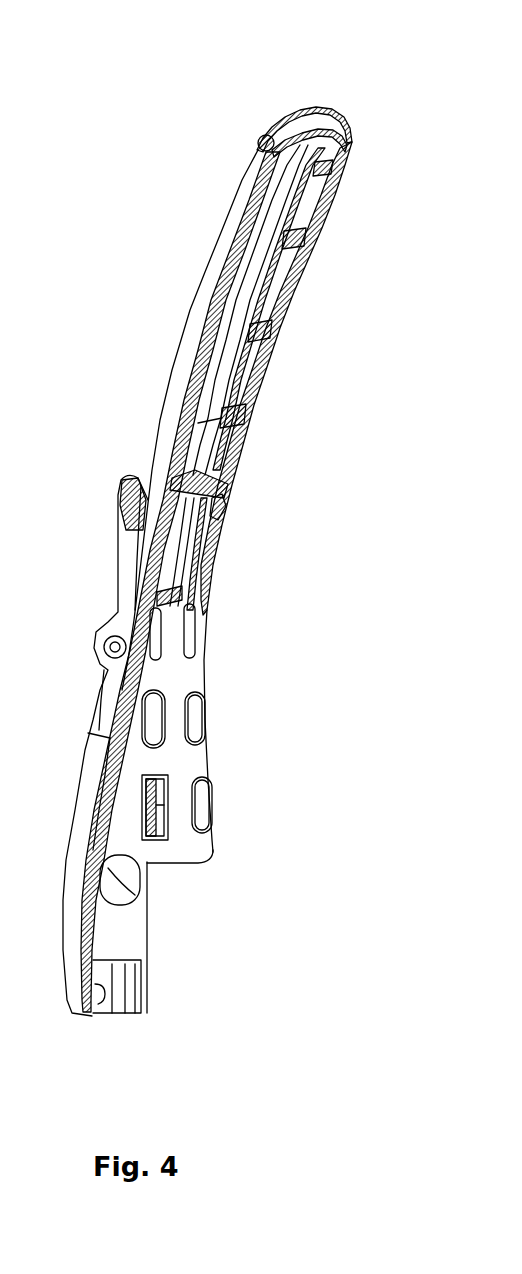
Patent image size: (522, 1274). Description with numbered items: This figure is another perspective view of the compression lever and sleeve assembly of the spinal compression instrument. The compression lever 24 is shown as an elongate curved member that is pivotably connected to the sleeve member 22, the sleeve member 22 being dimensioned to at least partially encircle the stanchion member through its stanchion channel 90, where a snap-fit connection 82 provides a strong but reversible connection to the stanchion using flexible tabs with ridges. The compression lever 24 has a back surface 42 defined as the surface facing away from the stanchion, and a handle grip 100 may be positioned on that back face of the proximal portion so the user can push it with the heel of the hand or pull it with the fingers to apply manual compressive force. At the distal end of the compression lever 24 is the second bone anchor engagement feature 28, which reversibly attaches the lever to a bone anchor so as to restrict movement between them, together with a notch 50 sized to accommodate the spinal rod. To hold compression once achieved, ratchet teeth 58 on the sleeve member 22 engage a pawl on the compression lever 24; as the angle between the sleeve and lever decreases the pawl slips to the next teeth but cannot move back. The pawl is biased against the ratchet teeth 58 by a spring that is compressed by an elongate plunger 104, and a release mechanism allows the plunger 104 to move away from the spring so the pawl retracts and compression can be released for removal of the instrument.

The compression lever 24 is at (157, 100).
The back surface 42 is at (323, 152).
The handle grip 100 is at (273, 283).
The elongate plunger 104 is at (208, 484).
The ratchet teeth 58 is at (222, 491).
The sleeve member 22 is at (241, 717).
The snap-fit connection 82 is at (150, 807).
The stanchion channel 90 is at (178, 878).
The second bone anchor engagement feature 28 is at (105, 977).
The notch 50 is at (100, 996).